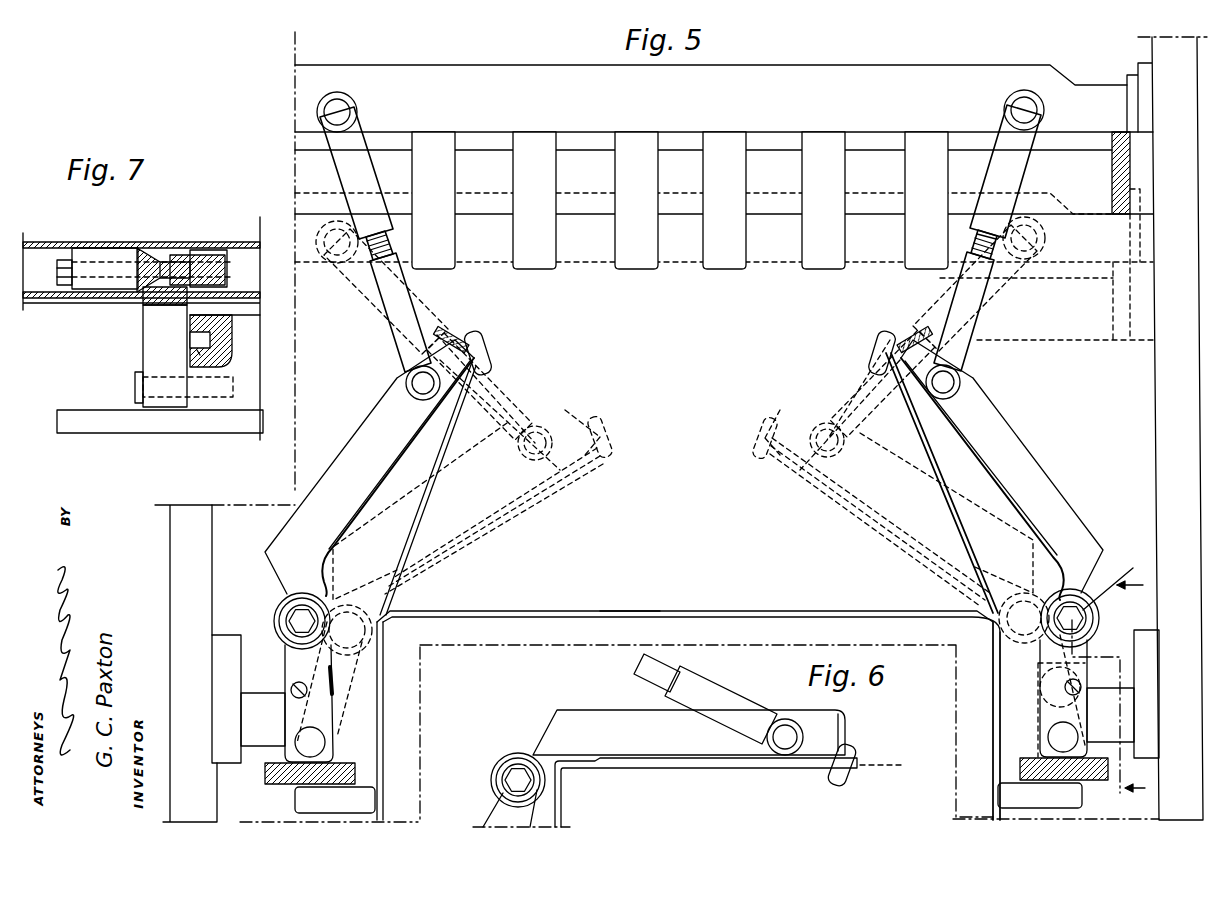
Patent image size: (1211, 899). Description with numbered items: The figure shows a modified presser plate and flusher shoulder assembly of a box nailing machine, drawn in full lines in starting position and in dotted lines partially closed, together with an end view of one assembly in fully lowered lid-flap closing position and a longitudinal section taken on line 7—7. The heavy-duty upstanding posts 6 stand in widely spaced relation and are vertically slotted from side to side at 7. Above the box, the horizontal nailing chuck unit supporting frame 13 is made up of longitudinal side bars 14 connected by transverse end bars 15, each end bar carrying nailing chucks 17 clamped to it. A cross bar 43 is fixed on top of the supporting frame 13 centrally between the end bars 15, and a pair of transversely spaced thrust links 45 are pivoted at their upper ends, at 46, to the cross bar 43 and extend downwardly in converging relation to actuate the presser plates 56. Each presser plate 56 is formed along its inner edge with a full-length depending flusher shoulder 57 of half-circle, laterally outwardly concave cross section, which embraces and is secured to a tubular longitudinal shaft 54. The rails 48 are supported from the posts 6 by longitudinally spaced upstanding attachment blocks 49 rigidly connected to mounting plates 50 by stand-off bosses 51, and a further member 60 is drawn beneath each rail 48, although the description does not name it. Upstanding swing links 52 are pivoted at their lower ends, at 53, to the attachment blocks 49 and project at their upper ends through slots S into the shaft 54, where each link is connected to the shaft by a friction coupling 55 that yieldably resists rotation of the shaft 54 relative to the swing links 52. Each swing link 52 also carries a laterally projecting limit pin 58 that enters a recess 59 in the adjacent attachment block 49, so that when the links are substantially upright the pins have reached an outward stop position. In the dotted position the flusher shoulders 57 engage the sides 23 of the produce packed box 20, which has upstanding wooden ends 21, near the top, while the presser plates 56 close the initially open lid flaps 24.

In FIG. 5, the upstanding posts 6 is at (190, 568).
In FIG. 5, the vertical slots 7 is at (1108, 684).
In FIG. 5, the nailing chuck unit supporting frame 13 is at (688, 222).
In FIG. 5, the longitudinal side bars 14 is at (1128, 167).
In FIG. 5, the transverse end bars 15 is at (870, 158).
In FIG. 5, the nailing chucks 17 is at (812, 228).
In FIG. 5, the produce packed box 20 is at (645, 610).
In FIG. 6, the produce packed box 20 is at (870, 762).
In FIG. 5, the wooden ends 21 is at (607, 620).
In FIG. 5, the sides 23 is at (383, 708).
In FIG. 5, the lid flaps 24 is at (430, 462).
In FIG. 6, the lid flaps 24 is at (708, 770).
In FIG. 5, the cross bar 43 is at (835, 78).
In FIG. 5, the thrust links 45 is at (375, 262).
In FIG. 6, the thrust links 45 is at (700, 690).
In FIG. 5, the upper pivot 46 is at (350, 108).
In FIG. 5, the rails 48 is at (268, 779).
In FIG. 7, the rails 48 is at (145, 425).
In FIG. 5, the attachment blocks 49 is at (338, 684).
In FIG. 7, the attachment blocks 49 is at (241, 403).
In FIG. 5, the mounting plates 50 is at (222, 673).
In FIG. 5, the stand-off bosses 51 is at (240, 736).
In FIG. 5, the swing links 52 is at (307, 712).
In FIG. 6, the swing links 52 is at (492, 812).
In FIG. 7, the swing links 52 is at (145, 358).
In FIG. 5, the lower pivot 53 is at (318, 742).
In FIG. 7, the lower pivot 53 is at (135, 385).
In FIG. 5, the tubular longitudinal shaft 54 is at (276, 619).
In FIG. 6, the tubular longitudinal shaft 54 is at (505, 758).
In FIG. 7, the tubular longitudinal shaft 54 is at (95, 242).
In FIG. 7, the friction coupling 55 is at (190, 255).
In FIG. 5, the presser plates 56 is at (392, 470).
In FIG. 6, the presser plates 56 is at (633, 757).
In FIG. 5, the flusher shoulders 57 is at (330, 636).
In FIG. 6, the flusher shoulders 57 is at (548, 795).
In FIG. 5, the limit pin 58 is at (292, 688).
In FIG. 7, the limit pin 58 is at (190, 336).
In FIG. 5, the recess 59 is at (1052, 693).
In FIG. 7, the recess 59 is at (197, 352).
In FIG. 5, the support pad 60 is at (302, 797).
In FIG. 7, the slots S is at (141, 303).